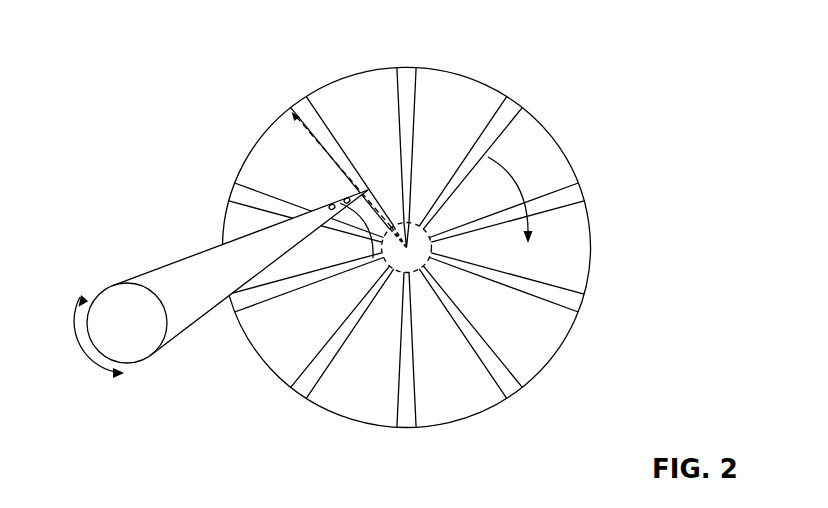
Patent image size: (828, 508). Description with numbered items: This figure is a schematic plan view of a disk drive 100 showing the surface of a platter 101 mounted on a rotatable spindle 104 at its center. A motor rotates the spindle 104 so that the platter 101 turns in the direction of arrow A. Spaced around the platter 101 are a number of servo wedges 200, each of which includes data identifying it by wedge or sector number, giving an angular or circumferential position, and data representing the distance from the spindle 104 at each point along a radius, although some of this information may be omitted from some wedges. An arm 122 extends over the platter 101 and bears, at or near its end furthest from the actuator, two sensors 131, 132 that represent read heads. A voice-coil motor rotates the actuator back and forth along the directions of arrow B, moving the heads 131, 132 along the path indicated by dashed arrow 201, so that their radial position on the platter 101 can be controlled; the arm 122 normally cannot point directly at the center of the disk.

The disk drive 100 is at (150, 33).
The platter 101 is at (343, 76).
The spindle 104 is at (416, 222).
The servo wedge 200 is at (407, 76).
The dashed arrow 201 is at (357, 165).
The arm 122 is at (150, 283).
The sensor 131 is at (373, 258).
The sensor 132 is at (333, 211).